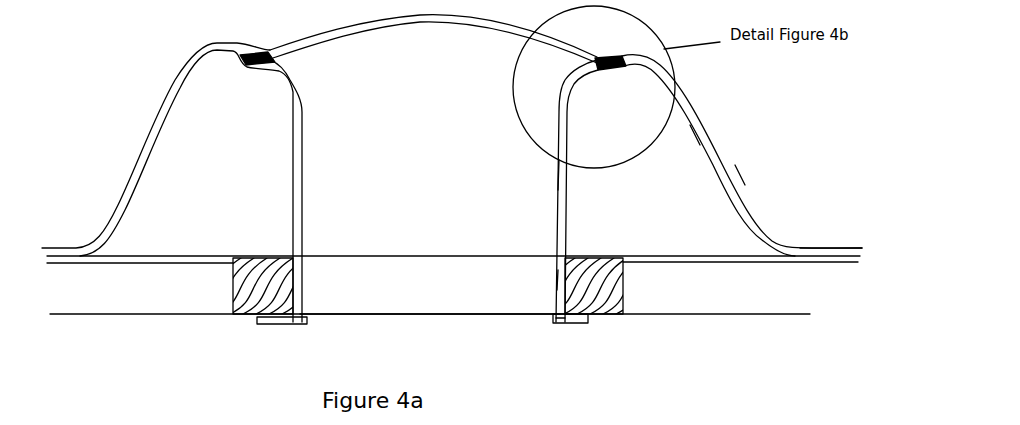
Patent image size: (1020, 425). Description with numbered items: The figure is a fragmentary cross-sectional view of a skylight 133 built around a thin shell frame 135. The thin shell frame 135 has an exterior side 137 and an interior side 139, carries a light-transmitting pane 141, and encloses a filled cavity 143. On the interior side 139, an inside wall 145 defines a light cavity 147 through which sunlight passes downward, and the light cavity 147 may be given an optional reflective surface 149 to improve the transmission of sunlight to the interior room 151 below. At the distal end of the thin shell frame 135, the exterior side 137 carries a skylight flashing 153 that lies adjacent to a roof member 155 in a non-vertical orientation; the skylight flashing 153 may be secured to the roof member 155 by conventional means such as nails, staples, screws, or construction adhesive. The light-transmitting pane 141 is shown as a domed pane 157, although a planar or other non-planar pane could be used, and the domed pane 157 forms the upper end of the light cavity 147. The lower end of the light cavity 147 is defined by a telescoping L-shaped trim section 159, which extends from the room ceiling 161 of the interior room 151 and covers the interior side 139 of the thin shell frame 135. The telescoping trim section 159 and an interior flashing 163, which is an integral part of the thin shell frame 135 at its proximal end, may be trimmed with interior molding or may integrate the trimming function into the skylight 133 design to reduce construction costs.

The skylight 133 is at (430, 25).
The thin shell frame 135 is at (727, 137).
The exterior side 137 is at (742, 155).
The interior side 139 is at (557, 202).
The light-transmitting pane 141 is at (400, 19).
The filled cavity 143 is at (696, 120).
The inside wall 145 is at (556, 175).
The light cavity 147 is at (435, 222).
The reflective surface 149 is at (556, 143).
The interior room 151 is at (434, 371).
The skylight flashing 153 is at (845, 246).
The roof member 155 is at (795, 294).
The domed pane 157 is at (354, 31).
The telescoping L-shaped trim section 159 is at (565, 326).
The room ceiling 161 is at (637, 317).
The interior flashing 163 is at (556, 280).